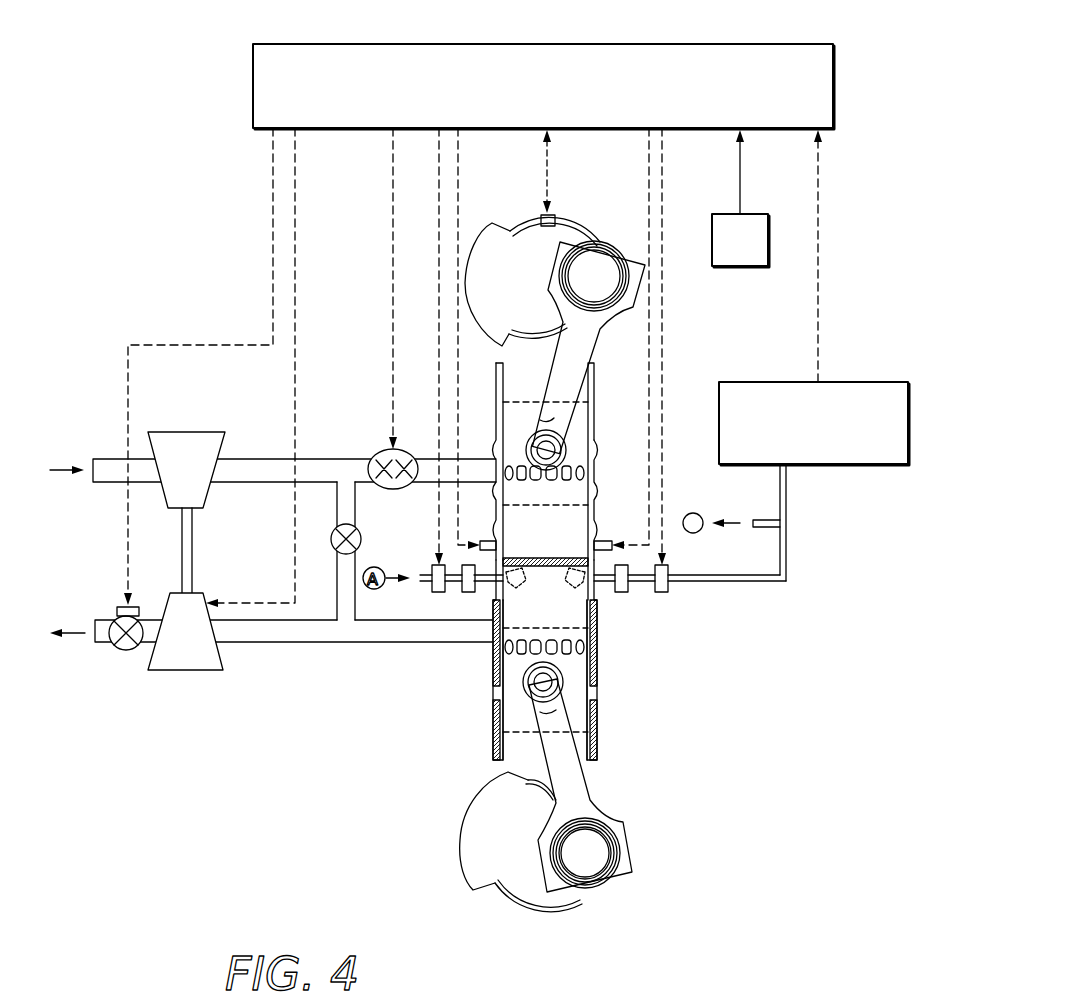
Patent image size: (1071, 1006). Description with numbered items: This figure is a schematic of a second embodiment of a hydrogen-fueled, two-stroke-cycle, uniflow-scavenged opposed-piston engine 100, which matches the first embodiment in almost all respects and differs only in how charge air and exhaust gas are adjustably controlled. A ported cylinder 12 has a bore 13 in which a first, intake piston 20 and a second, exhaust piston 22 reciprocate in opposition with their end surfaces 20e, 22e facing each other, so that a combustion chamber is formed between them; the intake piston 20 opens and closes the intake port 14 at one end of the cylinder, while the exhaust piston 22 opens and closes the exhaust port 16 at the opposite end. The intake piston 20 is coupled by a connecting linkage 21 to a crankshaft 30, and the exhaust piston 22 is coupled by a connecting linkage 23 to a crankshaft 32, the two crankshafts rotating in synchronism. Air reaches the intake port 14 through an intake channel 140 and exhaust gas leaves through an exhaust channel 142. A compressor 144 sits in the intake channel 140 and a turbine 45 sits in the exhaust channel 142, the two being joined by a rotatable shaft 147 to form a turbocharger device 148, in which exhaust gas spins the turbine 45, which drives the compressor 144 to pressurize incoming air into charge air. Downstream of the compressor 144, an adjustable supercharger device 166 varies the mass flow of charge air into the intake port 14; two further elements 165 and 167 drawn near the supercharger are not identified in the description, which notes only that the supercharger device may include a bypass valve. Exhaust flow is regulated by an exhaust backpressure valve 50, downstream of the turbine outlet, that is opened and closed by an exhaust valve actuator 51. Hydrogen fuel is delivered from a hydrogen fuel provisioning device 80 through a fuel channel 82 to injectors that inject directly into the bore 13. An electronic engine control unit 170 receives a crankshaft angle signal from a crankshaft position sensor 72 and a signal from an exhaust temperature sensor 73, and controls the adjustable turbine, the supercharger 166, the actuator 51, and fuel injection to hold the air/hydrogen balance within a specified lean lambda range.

The electronic engine control unit 170 is at (706, 44).
The crankshaft position sensor 72 is at (551, 212).
The crankshaft 30 is at (588, 234).
The hydrogen-fueled opposed-piston engine 100 is at (866, 279).
The exhaust temperature sensor 73 is at (740, 268).
The hydrogen fuel provisioning device 80 is at (910, 422).
The fuel channel 82 is at (788, 480).
The connecting linkage 21 is at (580, 343).
The ported cylinder 12 is at (595, 372).
The first piston 20 is at (578, 412).
The end surface of first piston 20e is at (570, 505).
The intake port 14 is at (594, 470).
The bore 13 is at (558, 541).
The intake channel 140 is at (467, 460).
The adjustable supercharger device 166 is at (378, 453).
The bypass valve 167 is at (383, 521).
The bypass passage 165 is at (333, 560).
The compressor 144 is at (203, 432).
The rotatable shaft 147 is at (192, 530).
The turbocharger device 148 is at (222, 542).
The exhaust valve actuator 51 is at (117, 611).
The exhaust backpressure valve 50 is at (128, 650).
The turbine 45 is at (187, 670).
The exhaust channel 142 is at (453, 643).
The end surface of second piston 22e is at (582, 627).
The exhaust port 16 is at (597, 650).
The second piston 22 is at (553, 723).
The connecting linkage 23 is at (580, 780).
The crankshaft 32 is at (542, 910).